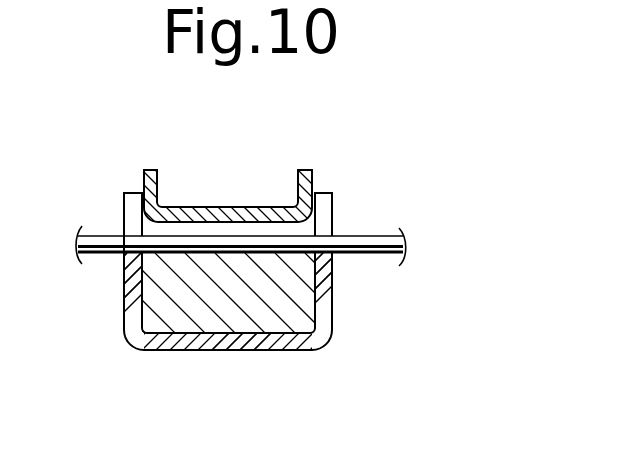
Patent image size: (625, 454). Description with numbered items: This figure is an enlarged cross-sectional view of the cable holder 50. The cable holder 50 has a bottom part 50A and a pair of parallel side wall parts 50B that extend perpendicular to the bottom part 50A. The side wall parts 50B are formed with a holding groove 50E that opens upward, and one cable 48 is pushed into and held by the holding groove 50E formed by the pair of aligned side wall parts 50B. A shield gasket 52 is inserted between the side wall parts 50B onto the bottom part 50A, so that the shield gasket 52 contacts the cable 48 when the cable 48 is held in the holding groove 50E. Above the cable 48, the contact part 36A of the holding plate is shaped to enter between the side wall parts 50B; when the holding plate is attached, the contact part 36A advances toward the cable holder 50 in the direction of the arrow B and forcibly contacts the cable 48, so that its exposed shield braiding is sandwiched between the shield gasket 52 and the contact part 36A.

The contact part 36A is at (267, 213).
The cable 48 is at (405, 238).
The cable holder 50 is at (333, 194).
The bottom part 50A is at (275, 342).
The side wall parts 50B is at (127, 288).
The holding groove 50E is at (325, 222).
The shield gasket 52 is at (185, 323).
The arrow B is at (223, 182).